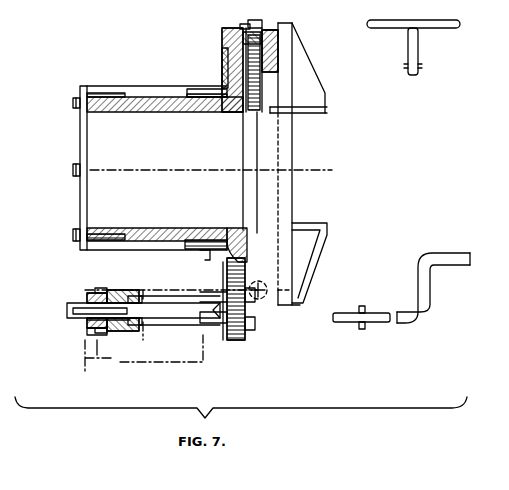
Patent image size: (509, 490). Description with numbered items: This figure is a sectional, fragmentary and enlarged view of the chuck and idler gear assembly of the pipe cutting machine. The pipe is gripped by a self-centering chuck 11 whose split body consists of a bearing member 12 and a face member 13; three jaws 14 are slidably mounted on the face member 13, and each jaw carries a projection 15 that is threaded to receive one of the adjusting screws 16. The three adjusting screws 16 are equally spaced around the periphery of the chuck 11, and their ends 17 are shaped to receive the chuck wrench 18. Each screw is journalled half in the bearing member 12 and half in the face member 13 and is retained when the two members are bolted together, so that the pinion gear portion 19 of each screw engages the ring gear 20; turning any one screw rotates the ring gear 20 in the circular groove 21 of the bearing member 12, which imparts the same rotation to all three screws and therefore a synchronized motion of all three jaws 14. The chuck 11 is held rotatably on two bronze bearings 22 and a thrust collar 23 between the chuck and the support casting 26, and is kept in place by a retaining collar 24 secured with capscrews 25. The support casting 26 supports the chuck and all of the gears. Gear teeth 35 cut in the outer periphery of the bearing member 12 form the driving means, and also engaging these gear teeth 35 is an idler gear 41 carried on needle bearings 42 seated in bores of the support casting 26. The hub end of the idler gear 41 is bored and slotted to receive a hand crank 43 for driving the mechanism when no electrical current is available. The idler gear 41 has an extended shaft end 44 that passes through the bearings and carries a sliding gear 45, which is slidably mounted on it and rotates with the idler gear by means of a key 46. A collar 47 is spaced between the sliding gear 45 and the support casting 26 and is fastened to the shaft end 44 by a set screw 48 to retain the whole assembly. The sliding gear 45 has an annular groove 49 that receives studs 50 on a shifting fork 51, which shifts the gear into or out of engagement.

The self-centering chuck 11 is at (140, 100).
The bearing member 12 is at (232, 50).
The face member 13 is at (290, 164).
The jaws 14 is at (330, 100).
The projection 15 is at (238, 72).
The adjusting screws 16 is at (251, 110).
The ends 17 is at (250, 22).
The chuck wrench 18 is at (383, 32).
The pinion gear portion 19 is at (278, 38).
The ring gear 20 is at (242, 44).
The circular groove 21 is at (262, 57).
The bronze bearings 22 is at (118, 94).
The thrust collar 23 is at (205, 252).
The retaining collar 24 is at (83, 203).
The capscrews 25 is at (74, 166).
The support casting 26 is at (108, 362).
The gear teeth 35 is at (245, 26).
The idler gear 41 is at (236, 337).
The needle bearings 42 is at (197, 326).
The hand crank 43 is at (380, 312).
The extended shaft end 44 is at (72, 309).
The sliding gear 45 is at (108, 290).
The key 46 is at (78, 300).
The collar 47 is at (128, 290).
The set screw 48 is at (136, 332).
The annular groove 49 is at (86, 321).
The studs 50 is at (87, 331).
The shifting fork 51 is at (99, 356).